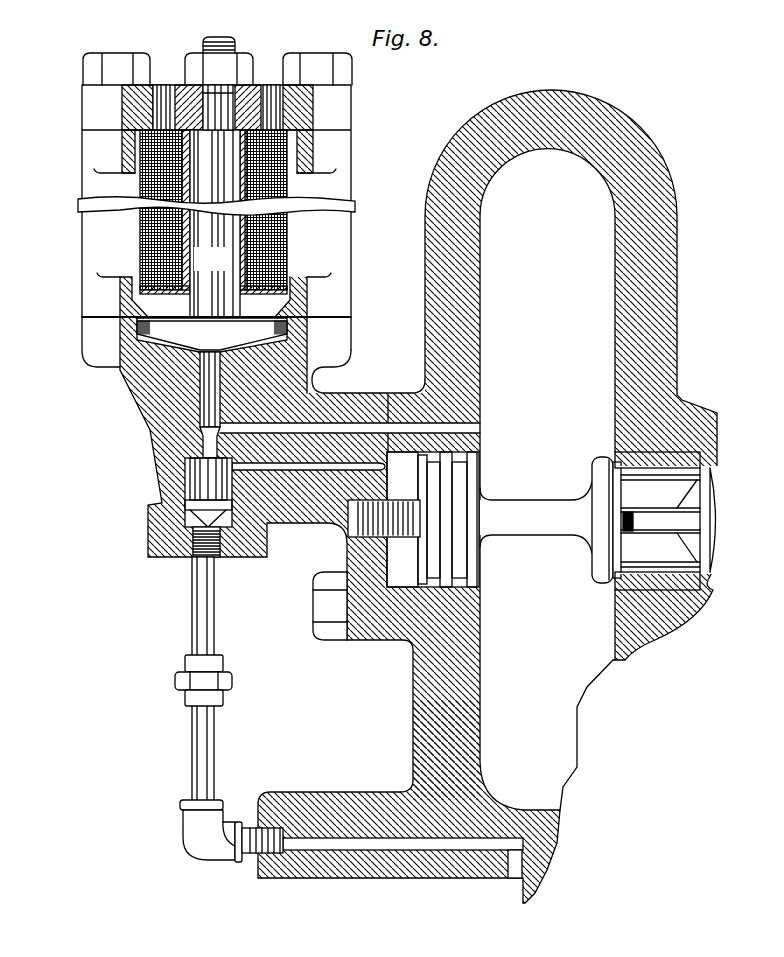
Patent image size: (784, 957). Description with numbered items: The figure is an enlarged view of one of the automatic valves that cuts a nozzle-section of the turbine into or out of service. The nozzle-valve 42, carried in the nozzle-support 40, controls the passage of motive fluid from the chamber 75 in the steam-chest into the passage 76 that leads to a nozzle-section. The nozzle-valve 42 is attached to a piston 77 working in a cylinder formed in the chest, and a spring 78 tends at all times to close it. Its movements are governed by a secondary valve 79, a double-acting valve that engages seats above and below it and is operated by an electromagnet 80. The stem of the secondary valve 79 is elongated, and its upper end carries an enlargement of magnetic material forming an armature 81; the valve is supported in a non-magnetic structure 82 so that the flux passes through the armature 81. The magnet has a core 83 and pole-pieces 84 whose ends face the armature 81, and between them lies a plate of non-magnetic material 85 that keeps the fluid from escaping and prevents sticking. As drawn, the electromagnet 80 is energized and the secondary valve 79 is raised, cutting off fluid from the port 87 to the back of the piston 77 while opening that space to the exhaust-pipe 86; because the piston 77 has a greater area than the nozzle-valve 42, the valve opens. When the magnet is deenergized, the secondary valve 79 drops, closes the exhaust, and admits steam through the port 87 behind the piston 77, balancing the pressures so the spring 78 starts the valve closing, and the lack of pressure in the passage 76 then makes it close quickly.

The nozzle-support 40 is at (312, 784).
The nozzle-valve 42 is at (600, 473).
The chamber 75 is at (571, 496).
The passage 76 is at (712, 492).
The piston 77 is at (458, 560).
The spring 78 is at (365, 525).
The secondary valve 79 is at (207, 476).
The electromagnet 80 is at (140, 222).
The armature 81 is at (137, 333).
The non-magnetic structure 82 is at (160, 412).
The core 83 is at (215, 177).
The pole-pieces 84 is at (85, 270).
The plate of non-magnetic material 85 is at (140, 317).
The exhaust-pipe 86 is at (205, 594).
The port 87 is at (357, 428).